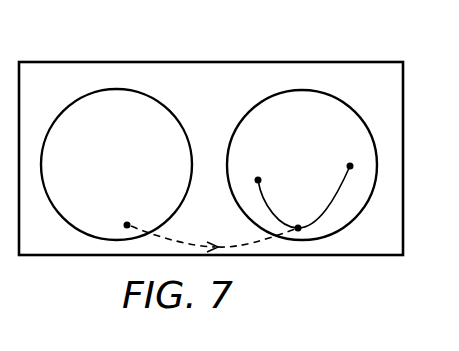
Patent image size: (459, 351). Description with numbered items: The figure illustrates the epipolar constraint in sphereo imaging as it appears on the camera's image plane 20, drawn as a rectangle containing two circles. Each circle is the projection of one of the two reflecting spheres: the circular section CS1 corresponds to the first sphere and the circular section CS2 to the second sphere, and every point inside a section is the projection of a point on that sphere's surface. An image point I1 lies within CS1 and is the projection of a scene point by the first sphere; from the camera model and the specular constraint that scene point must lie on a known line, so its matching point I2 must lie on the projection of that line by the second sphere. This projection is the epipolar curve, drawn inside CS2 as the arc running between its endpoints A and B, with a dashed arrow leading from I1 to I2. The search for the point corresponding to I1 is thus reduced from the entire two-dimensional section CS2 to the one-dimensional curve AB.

The image plane 20 is at (91, 62).
The circular image section of first sphere CS1 is at (116, 164).
The circular image section of second sphere CS2 is at (302, 165).
The image point I1 is at (117, 219).
The corresponding image point I2 is at (293, 214).
The endpoint of epipolar curve A is at (294, 197).
The endpoint of epipolar curve B is at (358, 167).